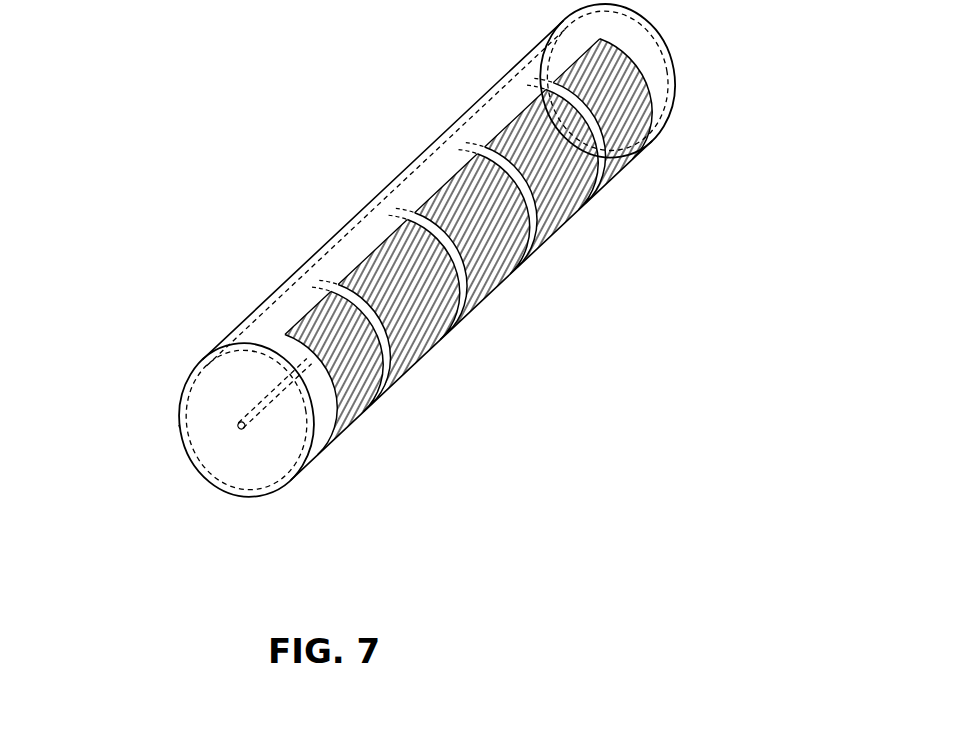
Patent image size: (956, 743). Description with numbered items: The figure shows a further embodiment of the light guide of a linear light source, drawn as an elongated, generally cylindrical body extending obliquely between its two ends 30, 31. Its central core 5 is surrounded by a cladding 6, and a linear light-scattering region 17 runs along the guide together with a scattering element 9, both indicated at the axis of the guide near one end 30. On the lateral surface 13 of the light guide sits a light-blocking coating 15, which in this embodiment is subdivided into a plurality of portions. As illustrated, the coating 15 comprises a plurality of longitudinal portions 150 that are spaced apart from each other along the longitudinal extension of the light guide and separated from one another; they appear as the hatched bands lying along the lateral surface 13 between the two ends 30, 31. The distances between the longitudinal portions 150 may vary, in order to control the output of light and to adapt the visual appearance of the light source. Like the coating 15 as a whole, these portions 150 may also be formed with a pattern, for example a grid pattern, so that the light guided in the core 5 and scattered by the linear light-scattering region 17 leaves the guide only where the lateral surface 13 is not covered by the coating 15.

The core 5 is at (272, 458).
The cladding 6 is at (211, 364).
The scattering element 9 is at (170, 473).
The lateral surface of light guide 13 is at (306, 265).
The light-blocking coating 15 is at (448, 337).
The linear light-scattering region 17 is at (238, 432).
The end of light guide 30 is at (179, 429).
The end of light guide 31 is at (674, 96).
The longitudinal portion of light-blocking coating 150 is at (557, 218).